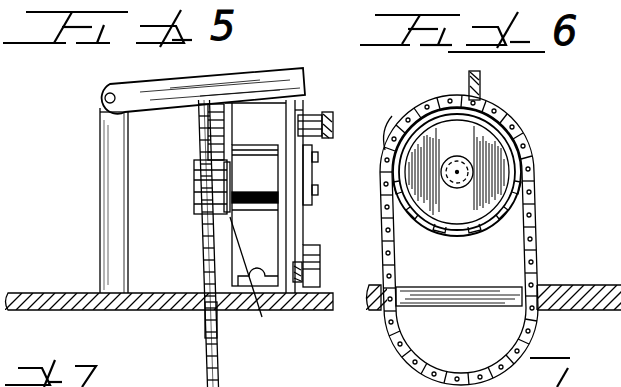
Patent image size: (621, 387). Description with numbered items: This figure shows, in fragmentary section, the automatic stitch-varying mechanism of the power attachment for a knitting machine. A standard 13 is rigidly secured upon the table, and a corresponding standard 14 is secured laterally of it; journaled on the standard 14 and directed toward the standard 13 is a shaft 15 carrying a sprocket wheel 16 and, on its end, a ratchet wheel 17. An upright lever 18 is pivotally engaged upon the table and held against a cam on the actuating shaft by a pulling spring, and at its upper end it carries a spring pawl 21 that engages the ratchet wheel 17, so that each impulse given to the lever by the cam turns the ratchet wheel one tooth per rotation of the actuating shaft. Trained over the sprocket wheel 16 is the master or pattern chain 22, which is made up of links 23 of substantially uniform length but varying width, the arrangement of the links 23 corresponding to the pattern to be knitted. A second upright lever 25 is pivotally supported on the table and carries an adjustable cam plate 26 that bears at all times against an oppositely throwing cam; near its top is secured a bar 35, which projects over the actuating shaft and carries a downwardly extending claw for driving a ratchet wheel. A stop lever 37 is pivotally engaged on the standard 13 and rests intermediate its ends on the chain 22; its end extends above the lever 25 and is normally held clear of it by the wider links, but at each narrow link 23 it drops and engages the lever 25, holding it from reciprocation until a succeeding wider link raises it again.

In FIG. 5, the standard 13 is at (118, 238).
In FIG. 5, the standard 14 is at (265, 240).
In FIG. 5, the shaft 15 is at (193, 170).
In FIG. 6, the shaft 15 is at (470, 171).
In FIG. 5, the sprocket wheel 16 is at (197, 127).
In FIG. 6, the sprocket wheel 16 is at (500, 187).
In FIG. 5, the ratchet wheel 17 is at (222, 176).
In FIG. 5, the upright lever 18 is at (254, 283).
In FIG. 5, the spring pawl 21 is at (212, 108).
In FIG. 5, the master or pattern chain 22 is at (201, 300).
In FIG. 6, the master or pattern chain 22 is at (518, 124).
In FIG. 6, the links 23 is at (518, 86).
In FIG. 5, the upright lever 25 is at (303, 104).
In FIG. 5, the adjustable cam plate 26 is at (310, 178).
In FIG. 5, the bar 35 is at (320, 115).
In FIG. 5, the stop lever 37 is at (239, 84).
In FIG. 6, the stop lever 37 is at (468, 84).